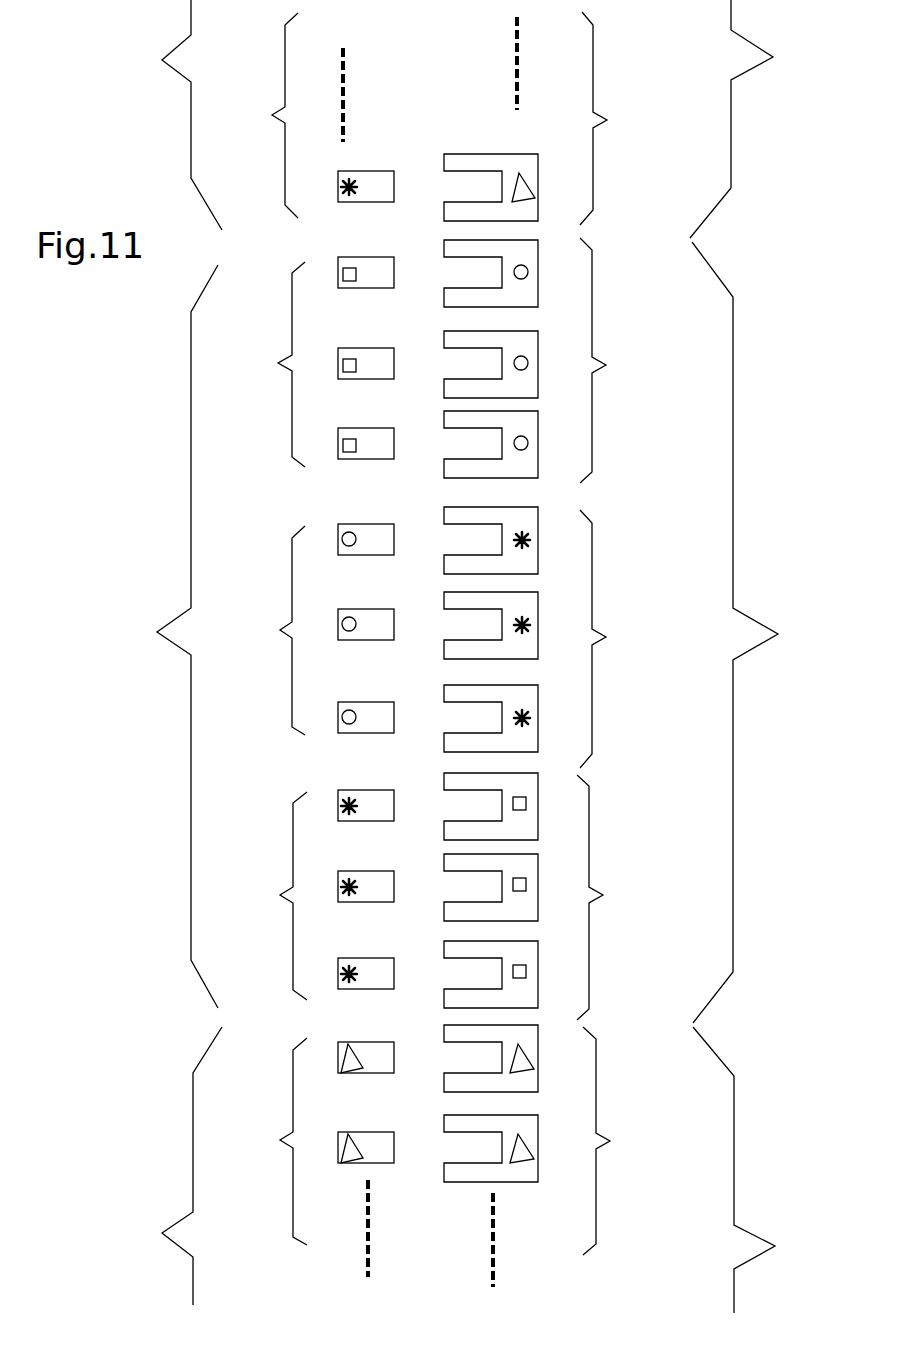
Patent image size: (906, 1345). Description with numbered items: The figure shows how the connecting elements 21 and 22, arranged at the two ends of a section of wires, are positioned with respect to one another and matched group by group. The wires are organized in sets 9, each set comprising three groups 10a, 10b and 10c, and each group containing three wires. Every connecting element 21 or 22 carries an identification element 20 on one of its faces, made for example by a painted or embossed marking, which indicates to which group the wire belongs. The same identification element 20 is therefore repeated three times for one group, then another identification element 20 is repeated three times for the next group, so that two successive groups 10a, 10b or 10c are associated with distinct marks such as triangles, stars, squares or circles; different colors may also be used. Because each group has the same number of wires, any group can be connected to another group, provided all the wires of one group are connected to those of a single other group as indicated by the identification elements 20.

The set 9 is at (472, 656).
The group 10a is at (446, 746).
The group 10b is at (444, 639).
The group 10c is at (441, 516).
The identification element 20 is at (340, 190).
The connecting element 21 is at (378, 171).
The connecting element 22 is at (470, 154).